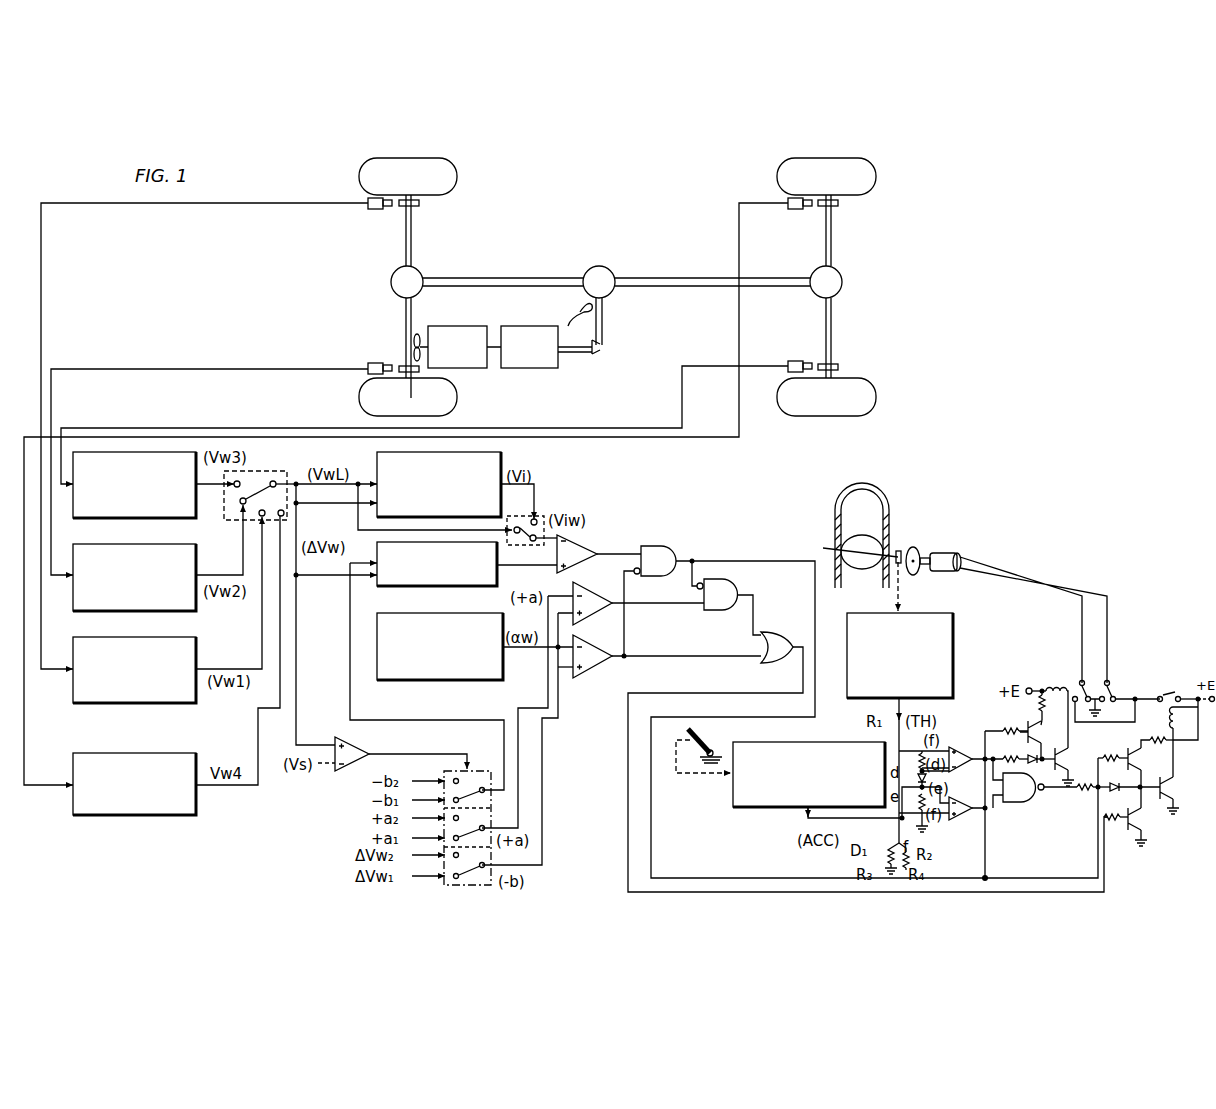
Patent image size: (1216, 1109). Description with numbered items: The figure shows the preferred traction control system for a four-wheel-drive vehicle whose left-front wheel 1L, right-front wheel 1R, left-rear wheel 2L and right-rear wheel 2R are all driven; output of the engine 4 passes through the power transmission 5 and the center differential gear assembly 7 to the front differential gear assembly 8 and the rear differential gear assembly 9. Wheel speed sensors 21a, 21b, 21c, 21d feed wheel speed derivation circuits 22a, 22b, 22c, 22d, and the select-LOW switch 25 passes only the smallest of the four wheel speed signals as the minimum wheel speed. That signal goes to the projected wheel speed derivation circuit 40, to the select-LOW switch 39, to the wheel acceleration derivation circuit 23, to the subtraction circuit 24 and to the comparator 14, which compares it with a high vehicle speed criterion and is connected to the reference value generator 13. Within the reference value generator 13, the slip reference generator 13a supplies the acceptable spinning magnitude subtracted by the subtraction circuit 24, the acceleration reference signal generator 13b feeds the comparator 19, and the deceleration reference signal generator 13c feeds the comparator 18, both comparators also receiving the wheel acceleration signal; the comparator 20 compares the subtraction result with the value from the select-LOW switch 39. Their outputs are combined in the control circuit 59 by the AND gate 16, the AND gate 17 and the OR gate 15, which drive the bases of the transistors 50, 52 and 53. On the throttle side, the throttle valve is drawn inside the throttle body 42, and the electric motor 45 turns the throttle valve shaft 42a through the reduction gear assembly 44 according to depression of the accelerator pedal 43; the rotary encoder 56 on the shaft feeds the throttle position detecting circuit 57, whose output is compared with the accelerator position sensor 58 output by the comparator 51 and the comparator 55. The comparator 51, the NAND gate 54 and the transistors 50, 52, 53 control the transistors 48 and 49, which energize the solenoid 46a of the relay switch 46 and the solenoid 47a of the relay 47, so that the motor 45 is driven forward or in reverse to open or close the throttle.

The right-front wheel 1R is at (457, 176).
The left-front wheel 1L is at (359, 398).
The right-rear wheel 2R is at (876, 176).
The left-rear wheel 2L is at (876, 400).
The automotive engine 4 is at (439, 326).
The power transmission 5 is at (508, 368).
The center differential gear assembly 7 is at (616, 272).
The front differential gear assembly 8 is at (424, 272).
The rear differential gear assembly 9 is at (843, 272).
The reference value generator 13 is at (501, 826).
The slip reference generator 13a is at (487, 855).
The acceleration reference signal generator 13b is at (487, 818).
The deceleration reference signal generator 13c is at (484, 770).
The comparator 14 is at (352, 750).
The OR gate 15 is at (782, 634).
The AND gate 16 is at (671, 546).
The AND gate 17 is at (738, 588).
The comparator 18 is at (590, 672).
The comparator 19 is at (590, 594).
The comparator 20 is at (586, 548).
The wheel speed sensor 21a is at (373, 210).
The wheel speed sensor 21b is at (375, 362).
The wheel speed sensor 21c is at (797, 210).
The wheel speed sensor 21d is at (793, 360).
The wheel speed derivation circuit 22a is at (116, 703).
The wheel speed derivation circuit 22b is at (116, 611).
The wheel speed derivation circuit 22c is at (116, 518).
The wheel speed derivation circuit 22d is at (100, 815).
The wheel acceleration derivation circuit 23 is at (503, 684).
The subtraction circuit 24 is at (497, 578).
The select-LOW switch 25 is at (262, 471).
The select-LOW switch 39 is at (548, 518).
The projected wheel speed derivation circuit 40 is at (377, 458).
The throttle body 42 is at (835, 550).
The throttle valve shaft 42a is at (870, 566).
The accelerator pedal 43 is at (708, 746).
The reduction gear assembly 44 is at (916, 556).
The electric motor 45 is at (952, 565).
The relay switch 46 is at (1110, 690).
The solenoid 46a is at (1053, 688).
The relay 47 is at (1172, 690).
The solenoid 47a is at (1168, 722).
The transistor 48 is at (1058, 750).
The transistor 49 is at (1168, 806).
The transistor 50 is at (1034, 724).
The comparator 51 is at (960, 748).
The transistor 52 is at (1122, 752).
The transistor 53 is at (1134, 840).
The NAND gate 54 is at (1030, 802).
The comparator 55 is at (962, 820).
The rotary encoder 56 is at (900, 550).
The throttle position detecting circuit 57 is at (953, 636).
The accelerator position sensor 58 is at (733, 796).
The control circuit 59 is at (752, 552).